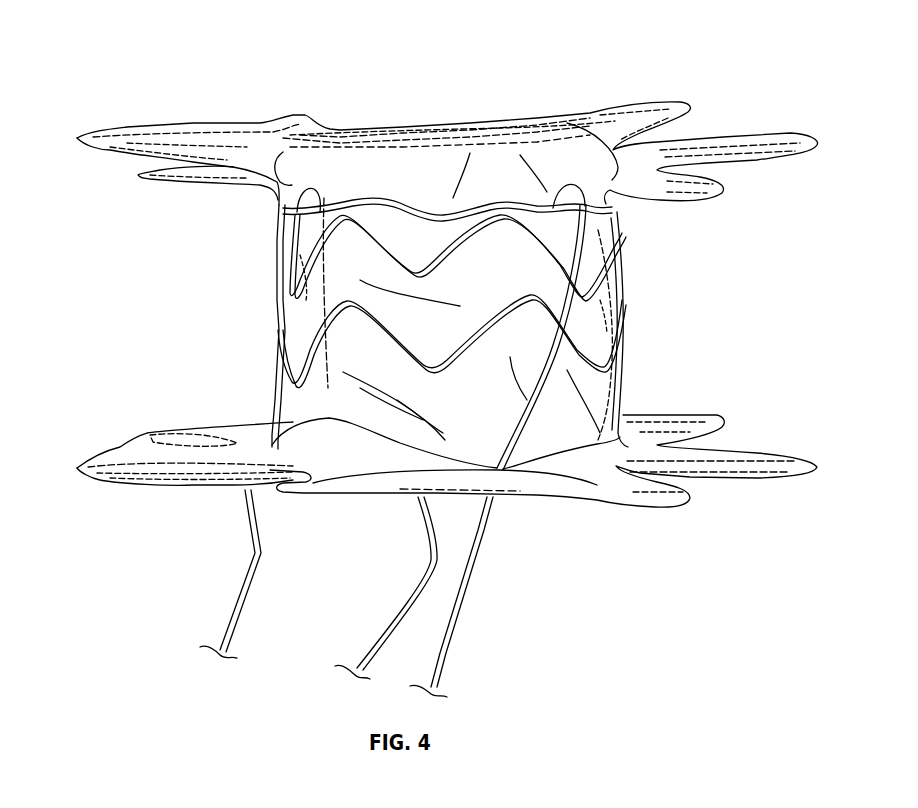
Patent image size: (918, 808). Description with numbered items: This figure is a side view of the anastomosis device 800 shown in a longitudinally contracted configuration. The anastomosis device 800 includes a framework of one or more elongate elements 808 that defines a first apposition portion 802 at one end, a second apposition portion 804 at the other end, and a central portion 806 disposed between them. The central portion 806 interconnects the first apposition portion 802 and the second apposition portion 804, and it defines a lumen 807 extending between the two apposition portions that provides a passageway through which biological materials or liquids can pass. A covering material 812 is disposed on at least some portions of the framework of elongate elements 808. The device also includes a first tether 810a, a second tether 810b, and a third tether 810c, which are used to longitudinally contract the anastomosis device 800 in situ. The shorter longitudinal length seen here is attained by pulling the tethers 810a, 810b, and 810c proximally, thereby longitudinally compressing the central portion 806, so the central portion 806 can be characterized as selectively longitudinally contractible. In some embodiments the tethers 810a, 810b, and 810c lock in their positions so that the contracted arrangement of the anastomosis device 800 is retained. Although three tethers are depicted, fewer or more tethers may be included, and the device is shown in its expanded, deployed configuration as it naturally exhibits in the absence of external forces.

The anastomosis device 800 is at (137, 62).
The first apposition portion 802 is at (73, 139).
The second apposition portion 804 is at (72, 473).
The central portion 806 is at (223, 316).
The lumen 807 is at (432, 168).
The elongate elements 808 is at (614, 277).
The first tether 810a is at (458, 620).
The second tether 810b is at (392, 620).
The third tether 810c is at (236, 605).
The covering material 812 is at (603, 392).